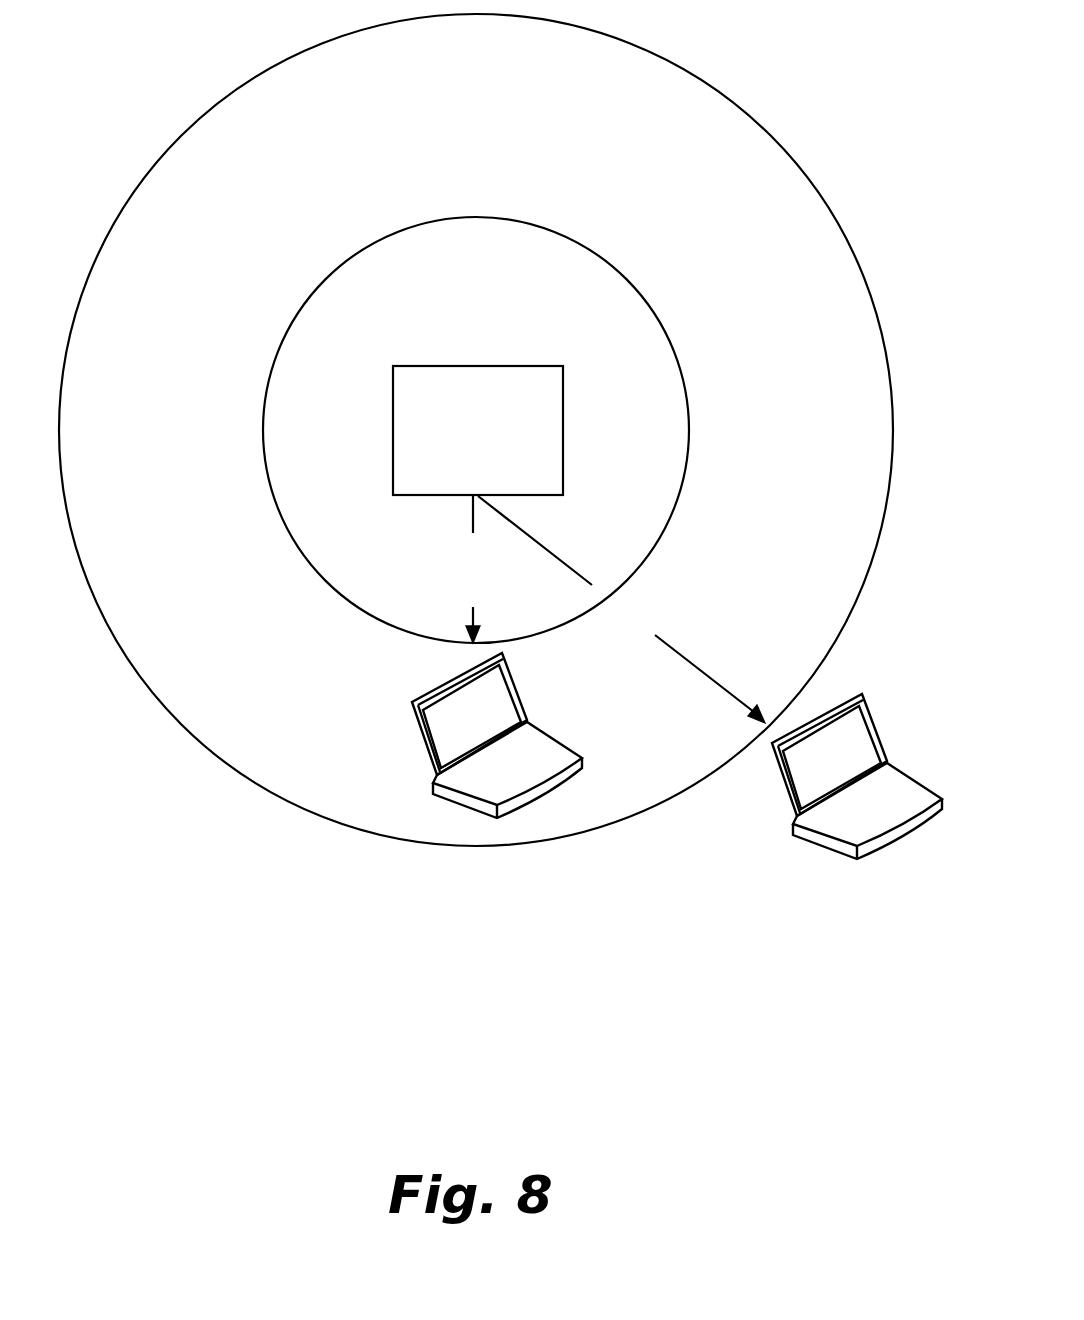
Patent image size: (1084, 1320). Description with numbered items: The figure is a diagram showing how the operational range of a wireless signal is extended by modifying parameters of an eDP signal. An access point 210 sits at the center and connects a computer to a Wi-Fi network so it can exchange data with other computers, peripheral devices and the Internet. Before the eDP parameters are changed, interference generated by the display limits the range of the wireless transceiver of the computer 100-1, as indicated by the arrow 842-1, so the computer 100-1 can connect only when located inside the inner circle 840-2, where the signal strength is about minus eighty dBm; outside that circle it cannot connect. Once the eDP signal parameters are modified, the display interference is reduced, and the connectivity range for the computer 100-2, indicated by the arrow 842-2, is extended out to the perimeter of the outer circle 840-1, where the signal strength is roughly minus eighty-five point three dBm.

The circle 840-1 is at (275, 62).
The circle 840-2 is at (300, 314).
The access point 210 is at (478, 430).
The arrow 842-1 is at (484, 569).
The arrow 842-2 is at (621, 609).
The computer 100-1 is at (440, 728).
The computer 100-2 is at (790, 768).